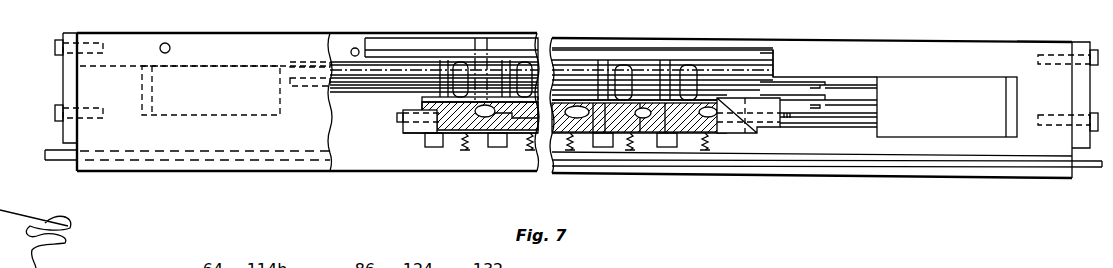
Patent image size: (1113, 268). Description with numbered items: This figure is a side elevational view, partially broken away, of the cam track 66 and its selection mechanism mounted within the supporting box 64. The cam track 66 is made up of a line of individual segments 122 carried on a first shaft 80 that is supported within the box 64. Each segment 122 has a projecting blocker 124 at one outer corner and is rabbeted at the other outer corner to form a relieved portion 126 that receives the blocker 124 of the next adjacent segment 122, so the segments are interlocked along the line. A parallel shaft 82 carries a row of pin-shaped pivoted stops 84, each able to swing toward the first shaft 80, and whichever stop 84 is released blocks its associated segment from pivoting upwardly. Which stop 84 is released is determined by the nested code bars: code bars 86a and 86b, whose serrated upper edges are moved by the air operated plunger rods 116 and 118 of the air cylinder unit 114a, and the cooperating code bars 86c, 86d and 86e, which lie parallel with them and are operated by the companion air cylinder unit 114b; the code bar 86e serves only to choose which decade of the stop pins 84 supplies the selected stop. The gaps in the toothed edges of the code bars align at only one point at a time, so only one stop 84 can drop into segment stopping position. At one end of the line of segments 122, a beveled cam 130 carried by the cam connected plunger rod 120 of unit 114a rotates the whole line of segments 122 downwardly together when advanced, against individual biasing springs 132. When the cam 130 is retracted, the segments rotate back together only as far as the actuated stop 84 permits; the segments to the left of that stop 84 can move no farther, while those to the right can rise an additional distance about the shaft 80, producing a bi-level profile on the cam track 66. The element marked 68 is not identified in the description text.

The supporting box 64 is at (133, 33).
The companion air cylinder unit 114b is at (220, 76).
The code bar 86e is at (338, 65).
The code bar 86d is at (362, 82).
The pivoted stops 84 is at (458, 67).
The code bar 86c is at (380, 89).
The first shaft 80 is at (402, 116).
The cam track 66 is at (415, 141).
The foot block 68 is at (432, 148).
The biasing springs 132 is at (470, 146).
The segments 122 is at (515, 140).
The projecting blocker 124 is at (562, 130).
The parallel shaft 82 is at (660, 52).
The code bar 86b is at (780, 76).
The code bar 86a is at (801, 80).
The plunger rod 116 is at (837, 100).
The plunger rod 118 is at (855, 83).
The air cylinder unit 114a is at (943, 80).
The cam connected plunger rod 120 is at (823, 124).
The beveled cam 130 is at (770, 130).
The relieved portion 126 is at (640, 133).